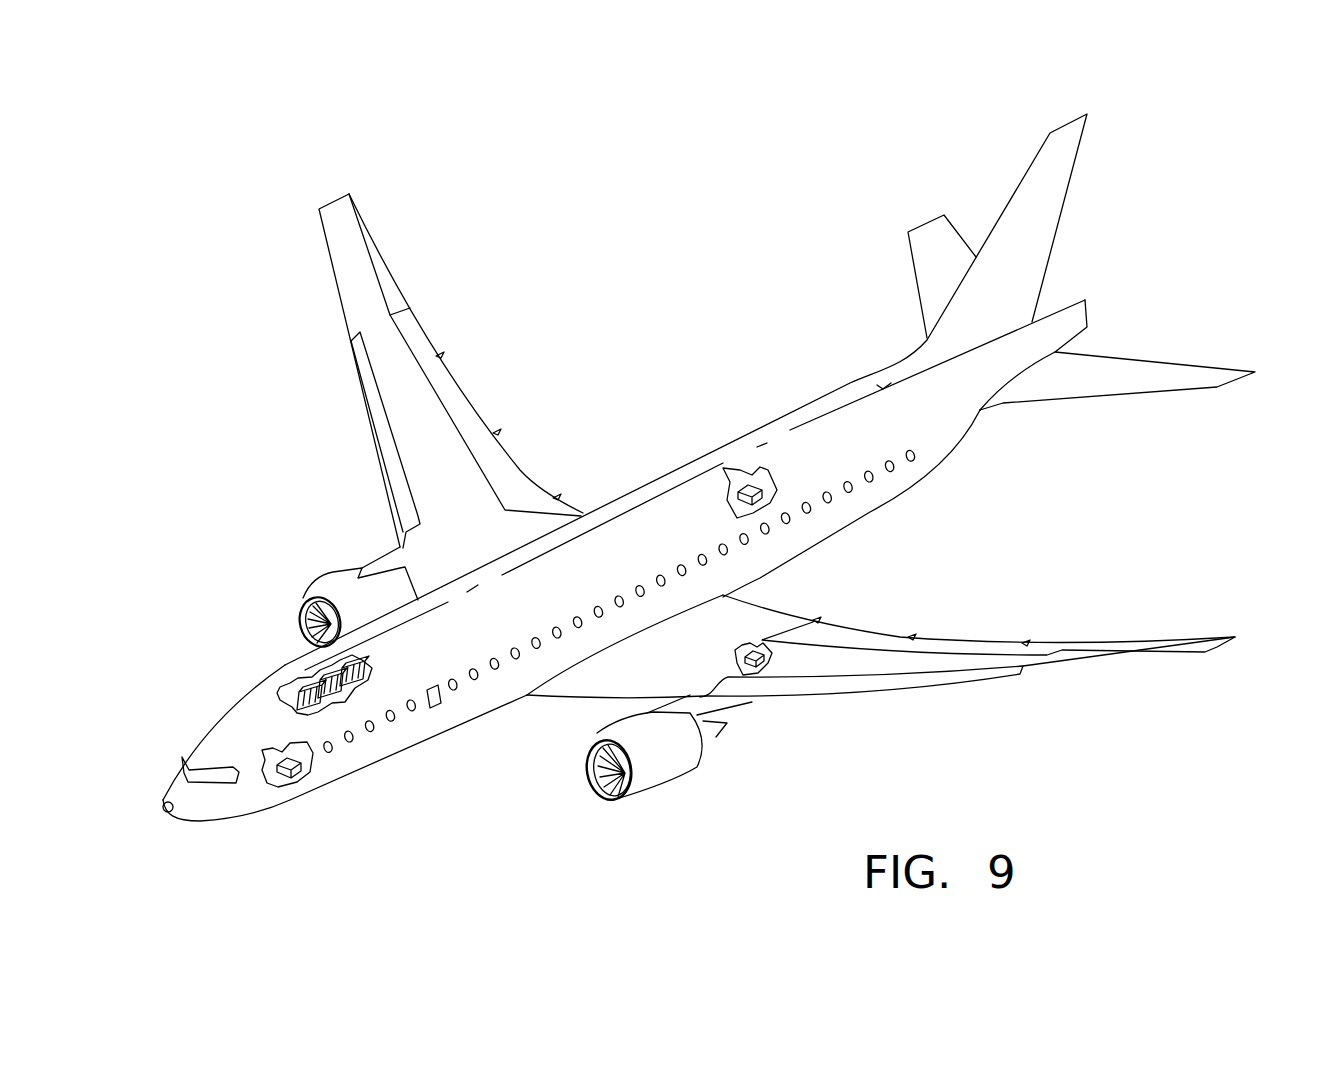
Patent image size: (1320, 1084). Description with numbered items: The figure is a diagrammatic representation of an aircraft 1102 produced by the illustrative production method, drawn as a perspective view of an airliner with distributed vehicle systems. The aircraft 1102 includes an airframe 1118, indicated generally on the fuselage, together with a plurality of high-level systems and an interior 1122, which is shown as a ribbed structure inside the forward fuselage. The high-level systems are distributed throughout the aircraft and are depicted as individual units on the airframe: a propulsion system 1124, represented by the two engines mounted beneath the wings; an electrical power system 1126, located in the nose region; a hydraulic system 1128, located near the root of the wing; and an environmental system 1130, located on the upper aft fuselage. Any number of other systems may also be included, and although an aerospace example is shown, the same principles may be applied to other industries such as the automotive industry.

The aircraft 1102 is at (288, 376).
The airframe 1118 is at (277, 645).
The interior 1122 is at (332, 705).
The propulsion system 1124 is at (333, 585).
The electrical power system 1126 is at (285, 760).
The hydraulic system 1128 is at (758, 642).
The environmental system 1130 is at (744, 486).